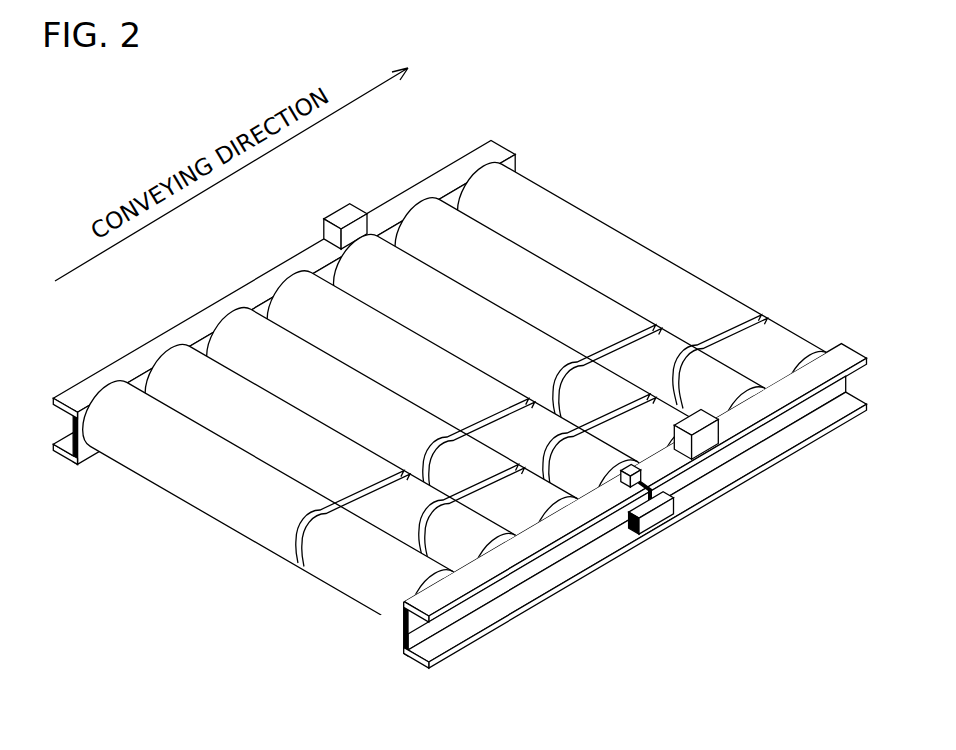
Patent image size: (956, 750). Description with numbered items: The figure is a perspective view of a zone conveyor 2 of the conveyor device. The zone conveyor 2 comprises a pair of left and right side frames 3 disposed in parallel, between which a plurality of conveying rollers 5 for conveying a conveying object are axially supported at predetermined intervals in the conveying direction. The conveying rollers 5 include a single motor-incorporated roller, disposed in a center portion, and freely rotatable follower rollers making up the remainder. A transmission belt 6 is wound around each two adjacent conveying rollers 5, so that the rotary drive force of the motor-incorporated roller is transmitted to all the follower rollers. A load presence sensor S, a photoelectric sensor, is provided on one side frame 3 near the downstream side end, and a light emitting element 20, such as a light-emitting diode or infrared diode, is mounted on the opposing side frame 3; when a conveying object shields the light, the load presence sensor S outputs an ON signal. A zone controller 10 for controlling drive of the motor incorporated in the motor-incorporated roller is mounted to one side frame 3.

The zone conveyor 2 is at (581, 133).
The side frame 3 is at (73, 393).
The conveying roller 5 is at (468, 192).
The transmission belt 6 is at (713, 343).
The zone controller 10 is at (663, 515).
The light emitting element 20 is at (714, 443).
The load presence sensor S is at (340, 213).